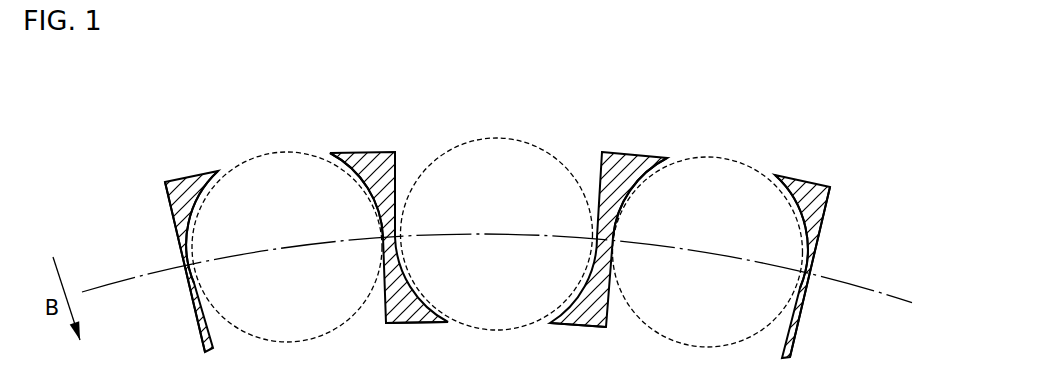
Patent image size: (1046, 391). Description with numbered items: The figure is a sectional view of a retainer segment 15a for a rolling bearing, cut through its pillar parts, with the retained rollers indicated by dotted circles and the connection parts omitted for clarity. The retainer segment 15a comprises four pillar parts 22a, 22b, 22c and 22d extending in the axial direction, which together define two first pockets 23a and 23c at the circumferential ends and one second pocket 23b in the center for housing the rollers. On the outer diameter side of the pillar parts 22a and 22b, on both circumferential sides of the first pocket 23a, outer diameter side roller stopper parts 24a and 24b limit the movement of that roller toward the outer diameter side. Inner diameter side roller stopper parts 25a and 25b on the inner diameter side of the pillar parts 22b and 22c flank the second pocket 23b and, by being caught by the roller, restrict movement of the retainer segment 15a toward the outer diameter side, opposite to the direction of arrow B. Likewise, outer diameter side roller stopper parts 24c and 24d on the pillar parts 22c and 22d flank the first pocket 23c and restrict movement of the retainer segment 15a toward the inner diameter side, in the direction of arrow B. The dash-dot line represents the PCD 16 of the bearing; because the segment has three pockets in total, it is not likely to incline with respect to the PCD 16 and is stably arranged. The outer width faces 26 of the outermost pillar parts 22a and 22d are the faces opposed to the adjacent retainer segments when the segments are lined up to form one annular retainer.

The retainer segment 15a is at (817, 77).
The PCD 16 is at (857, 287).
The pillar part 22a is at (178, 177).
The pillar part 22b is at (377, 152).
The pillar part 22c is at (622, 155).
The pillar part 22d is at (823, 187).
The first pocket 23a is at (277, 173).
The second pocket 23b is at (493, 162).
The first pocket 23c is at (720, 178).
The outer diameter side roller stopper part 24a is at (212, 170).
The outer diameter side roller stopper part 24b is at (348, 152).
The outer diameter side roller stopper part 24c is at (652, 157).
The outer diameter side roller stopper part 24d is at (787, 182).
The inner diameter side roller stopper part 25a is at (423, 322).
The inner diameter side roller stopper part 25b is at (573, 324).
The outer width face 26 is at (175, 208).